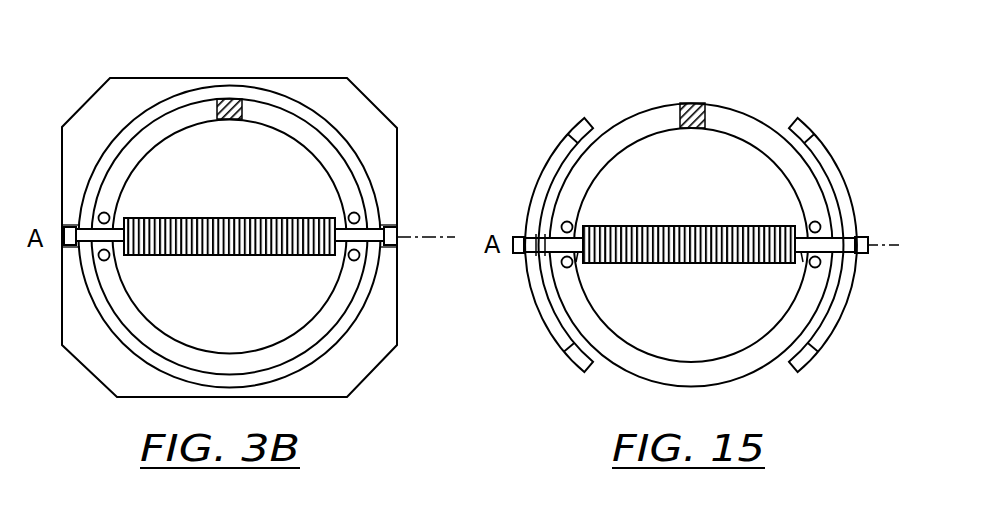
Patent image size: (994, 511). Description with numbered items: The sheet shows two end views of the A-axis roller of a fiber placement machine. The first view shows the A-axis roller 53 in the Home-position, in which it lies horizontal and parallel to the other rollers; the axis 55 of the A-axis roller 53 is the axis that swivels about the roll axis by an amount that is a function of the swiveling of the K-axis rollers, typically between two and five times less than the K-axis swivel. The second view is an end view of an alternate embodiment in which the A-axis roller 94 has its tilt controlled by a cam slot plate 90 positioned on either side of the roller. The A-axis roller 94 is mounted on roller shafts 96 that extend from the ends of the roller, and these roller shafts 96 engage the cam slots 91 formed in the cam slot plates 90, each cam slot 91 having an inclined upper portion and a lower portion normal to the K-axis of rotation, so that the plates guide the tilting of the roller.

In FIG. 3B, the A-axis roller 53 is at (218, 224).
In FIG. 3B, the axis of the A-axis roller 55 is at (432, 237).
In FIG. 15, the axis of the A-axis roller 55 is at (866, 245).
In FIG. 15, the cam slot plate 90 is at (814, 116).
In FIG. 15, the cam slot 91 is at (837, 148).
In FIG. 15, the A-axis roller 94 is at (686, 236).
In FIG. 15, the roller shaft 96 is at (577, 256).